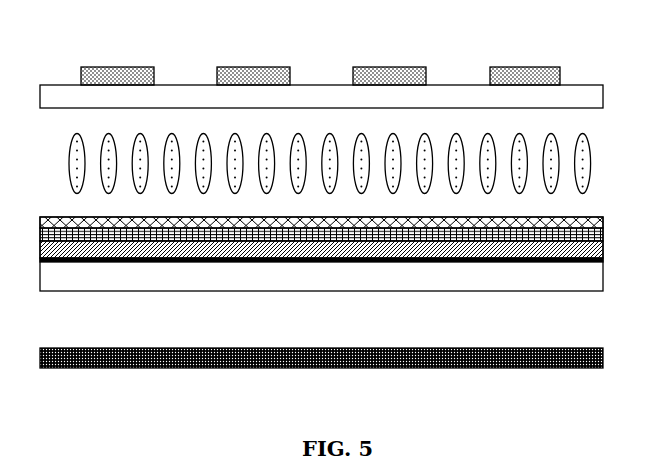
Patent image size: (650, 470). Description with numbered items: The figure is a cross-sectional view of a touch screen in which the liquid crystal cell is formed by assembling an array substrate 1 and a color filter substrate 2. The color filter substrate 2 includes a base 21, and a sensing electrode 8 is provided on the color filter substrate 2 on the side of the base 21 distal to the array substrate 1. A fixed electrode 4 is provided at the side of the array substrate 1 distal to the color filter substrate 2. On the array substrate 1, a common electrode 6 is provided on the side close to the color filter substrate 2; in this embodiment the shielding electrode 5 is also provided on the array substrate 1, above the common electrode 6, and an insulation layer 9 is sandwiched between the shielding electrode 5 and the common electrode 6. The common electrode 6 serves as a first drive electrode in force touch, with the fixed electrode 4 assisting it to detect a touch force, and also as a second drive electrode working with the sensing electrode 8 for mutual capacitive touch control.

The array substrate 1 is at (333, 275).
The color filter substrate 2 is at (327, 63).
The base 21 is at (59, 102).
The sensing electrode 8 is at (257, 77).
The insulation layer 9 is at (280, 222).
The shielding electrode 5 is at (397, 233).
The common electrode 6 is at (170, 257).
The fixed electrode 4 is at (512, 360).